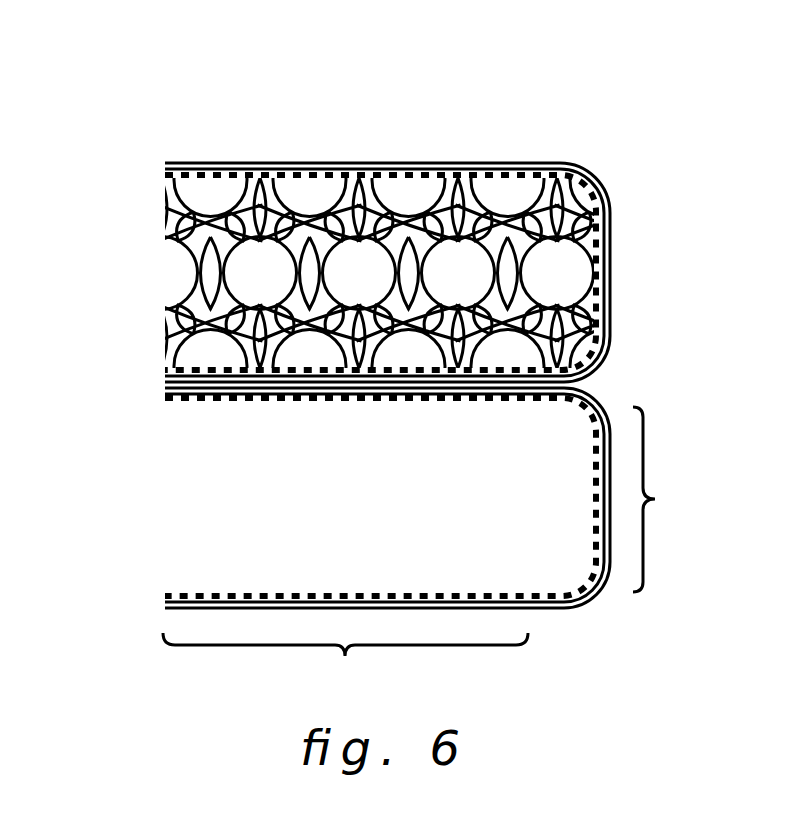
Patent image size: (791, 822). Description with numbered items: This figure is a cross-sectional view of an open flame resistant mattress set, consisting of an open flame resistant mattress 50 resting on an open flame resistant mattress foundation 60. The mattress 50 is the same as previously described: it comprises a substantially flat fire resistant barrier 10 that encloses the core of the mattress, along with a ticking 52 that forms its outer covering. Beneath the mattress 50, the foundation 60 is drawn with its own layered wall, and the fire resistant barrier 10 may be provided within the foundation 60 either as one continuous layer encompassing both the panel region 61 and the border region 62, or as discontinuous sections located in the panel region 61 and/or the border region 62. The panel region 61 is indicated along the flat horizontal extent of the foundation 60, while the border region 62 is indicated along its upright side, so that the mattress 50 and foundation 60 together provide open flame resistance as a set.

The fire resistant barrier 10 is at (375, 400).
The open flame resistant mattress 50 is at (612, 140).
The ticking 52 is at (676, 362).
The open flame resistant mattress foundation 60 is at (560, 672).
The panel region 61 is at (345, 665).
The border region 62 is at (665, 499).